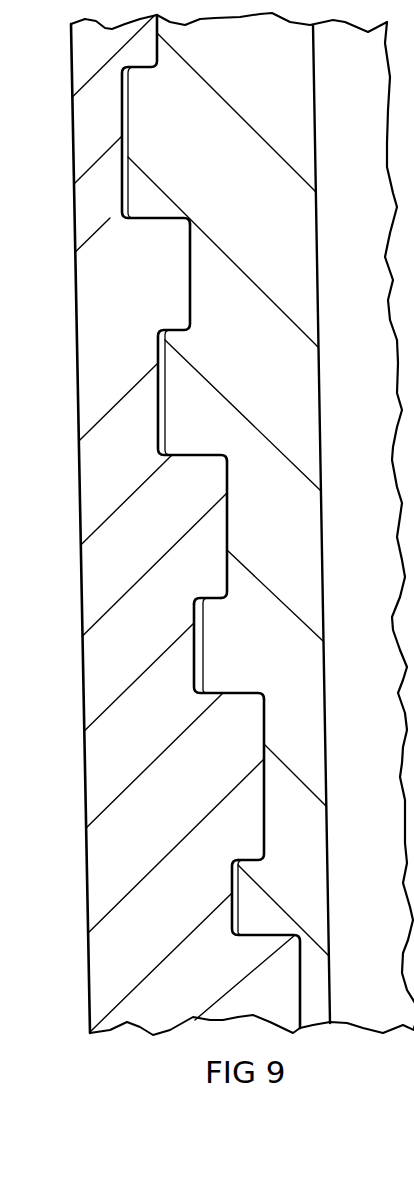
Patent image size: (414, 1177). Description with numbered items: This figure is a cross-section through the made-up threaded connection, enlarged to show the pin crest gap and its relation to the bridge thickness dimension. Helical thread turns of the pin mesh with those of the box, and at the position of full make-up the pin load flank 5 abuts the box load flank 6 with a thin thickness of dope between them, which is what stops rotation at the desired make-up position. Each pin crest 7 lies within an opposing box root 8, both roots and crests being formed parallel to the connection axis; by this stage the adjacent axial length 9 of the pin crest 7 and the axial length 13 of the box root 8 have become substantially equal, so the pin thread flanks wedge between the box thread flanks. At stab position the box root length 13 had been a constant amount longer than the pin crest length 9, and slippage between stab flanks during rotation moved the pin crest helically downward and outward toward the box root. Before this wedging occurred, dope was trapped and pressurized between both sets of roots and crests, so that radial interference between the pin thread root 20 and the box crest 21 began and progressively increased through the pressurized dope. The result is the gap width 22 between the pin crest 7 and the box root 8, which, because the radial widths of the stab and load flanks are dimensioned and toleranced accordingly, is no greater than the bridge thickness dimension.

The pin load flank 5 is at (254, 870).
The box load flank 6 is at (233, 888).
The pin crest 7 is at (128, 135).
The box root 8 is at (127, 173).
The axial length of pin crest 9 is at (204, 654).
The axial length of box root 13 is at (198, 670).
The pin thread root 20 is at (227, 543).
The box crest 21 is at (226, 577).
The gap width 22 is at (160, 377).